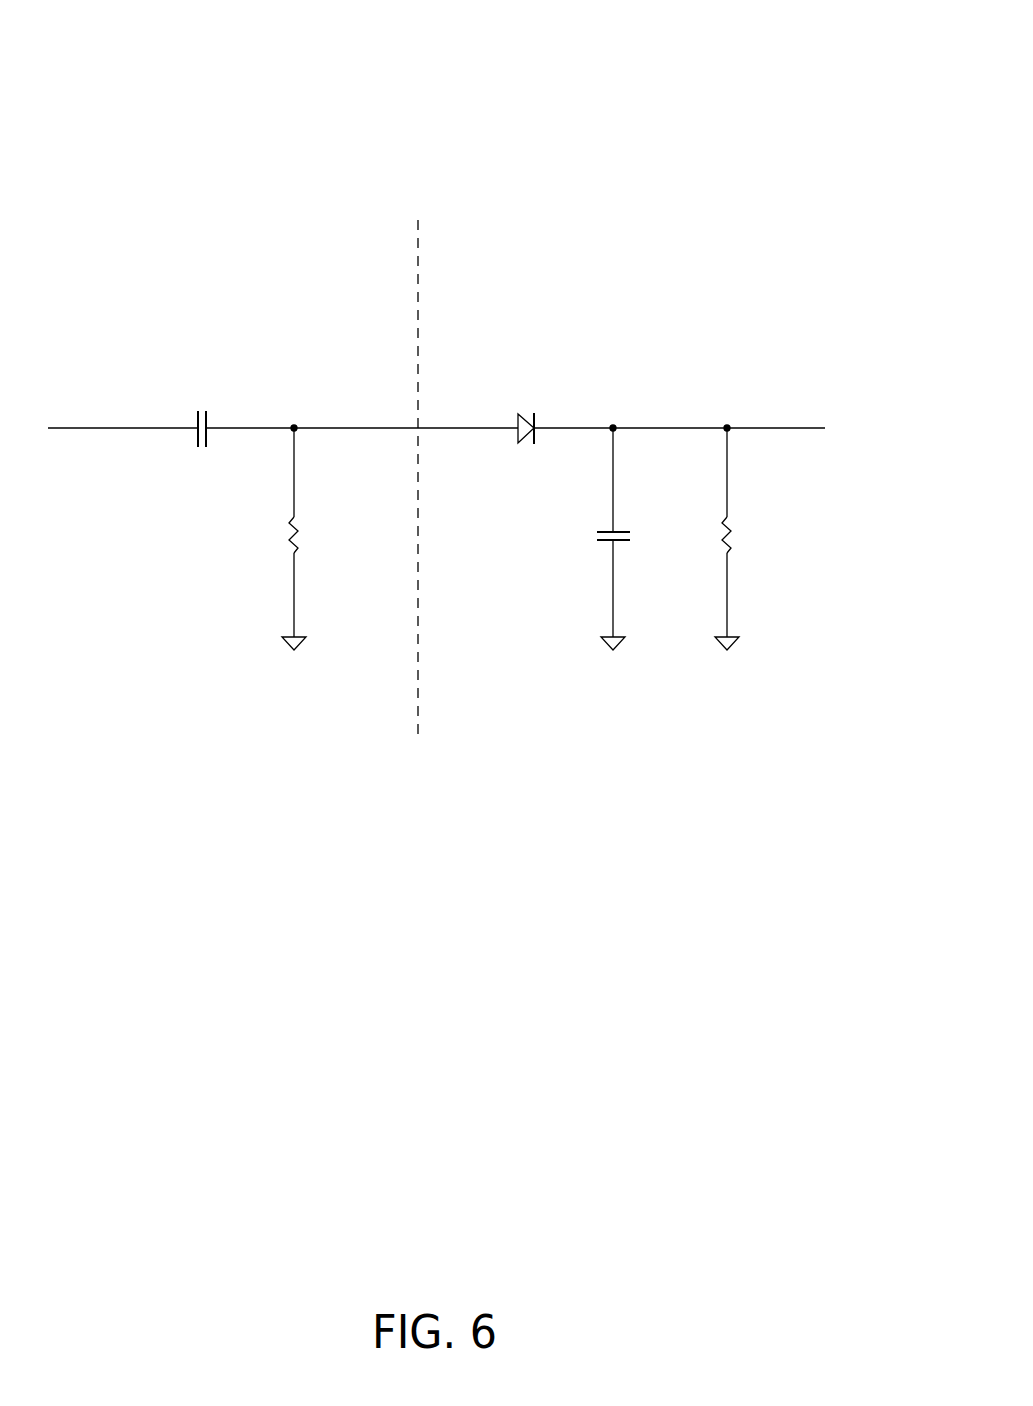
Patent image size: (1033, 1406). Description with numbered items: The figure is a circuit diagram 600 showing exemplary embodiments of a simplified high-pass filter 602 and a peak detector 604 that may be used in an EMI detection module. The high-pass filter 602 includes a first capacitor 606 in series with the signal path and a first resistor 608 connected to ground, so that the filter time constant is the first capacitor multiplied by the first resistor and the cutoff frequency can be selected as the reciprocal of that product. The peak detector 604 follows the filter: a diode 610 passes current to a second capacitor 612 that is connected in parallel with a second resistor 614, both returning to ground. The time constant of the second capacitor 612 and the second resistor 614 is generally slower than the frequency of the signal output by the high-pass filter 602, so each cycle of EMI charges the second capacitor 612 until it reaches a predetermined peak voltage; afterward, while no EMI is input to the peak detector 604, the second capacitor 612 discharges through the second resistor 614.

The envelope detector circuit 600 is at (675, 49).
The high-pass filter 602 is at (121, 321).
The peak detector 604 is at (708, 289).
The capacitor C1 606 is at (199, 410).
The resistor R1 608 is at (290, 547).
The diode D 610 is at (531, 413).
The capacitor C2 612 is at (596, 538).
The resistor R2 614 is at (732, 533).